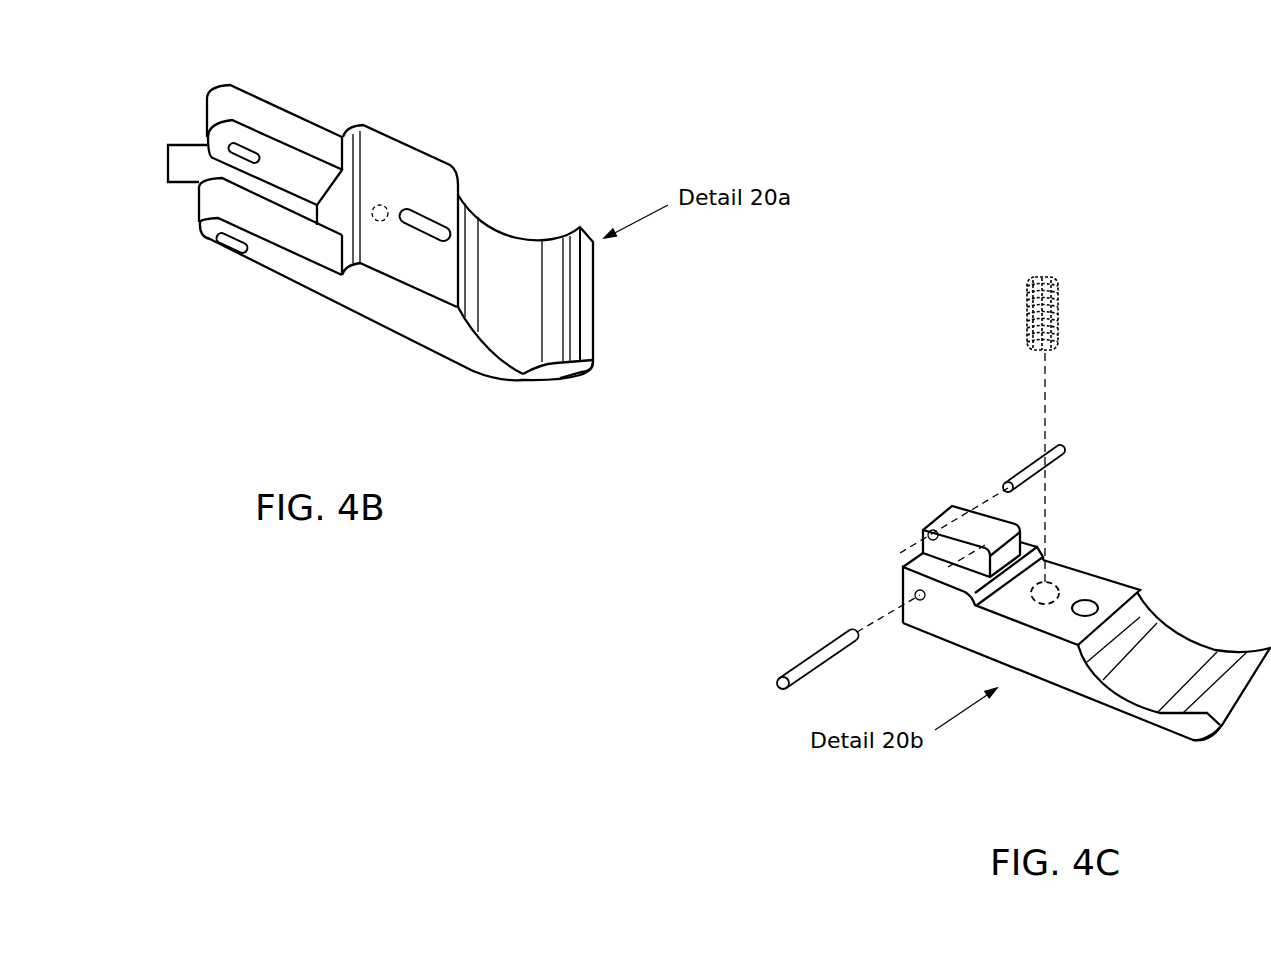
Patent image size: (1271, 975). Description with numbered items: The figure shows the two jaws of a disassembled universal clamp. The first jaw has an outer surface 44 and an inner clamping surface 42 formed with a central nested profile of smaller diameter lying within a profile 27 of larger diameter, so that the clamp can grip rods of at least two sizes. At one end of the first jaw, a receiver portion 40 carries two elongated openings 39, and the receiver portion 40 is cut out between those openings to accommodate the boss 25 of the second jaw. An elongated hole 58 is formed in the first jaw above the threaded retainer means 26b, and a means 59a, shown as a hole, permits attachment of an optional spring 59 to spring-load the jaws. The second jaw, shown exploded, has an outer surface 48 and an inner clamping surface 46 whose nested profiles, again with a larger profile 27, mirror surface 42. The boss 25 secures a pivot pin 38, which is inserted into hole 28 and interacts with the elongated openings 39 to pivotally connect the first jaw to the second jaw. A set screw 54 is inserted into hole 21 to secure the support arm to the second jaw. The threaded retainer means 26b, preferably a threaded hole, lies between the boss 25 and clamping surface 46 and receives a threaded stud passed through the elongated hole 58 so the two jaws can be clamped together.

In FIG. 4C, the hole 21 is at (913, 595).
In FIG. 4C, the boss 25 is at (926, 532).
In FIG. 4C, the threaded retainer means 26b is at (1087, 605).
In FIG. 4B, the profile 27 is at (472, 275).
In FIG. 4C, the profile 27 is at (1225, 663).
In FIG. 4C, the hole 28 is at (930, 521).
In FIG. 4C, the pivot pin 38 is at (1012, 472).
In FIG. 4B, the elongated openings 39 is at (243, 243).
In FIG. 4B, the receiver portion 40 is at (168, 148).
In FIG. 4B, the inner clamping surface 42 is at (513, 260).
In FIG. 4B, the outer surface 44 is at (420, 357).
In FIG. 4C, the inner clamping surface 46 is at (1162, 668).
In FIG. 4C, the outer surface 48 is at (1123, 717).
In FIG. 4C, the set screw 54 is at (790, 667).
In FIG. 4B, the elongated hole 58 is at (427, 212).
In FIG. 4C, the spring 59 is at (1065, 326).
In FIG. 4B, the means for attachment of spring 59a is at (375, 203).